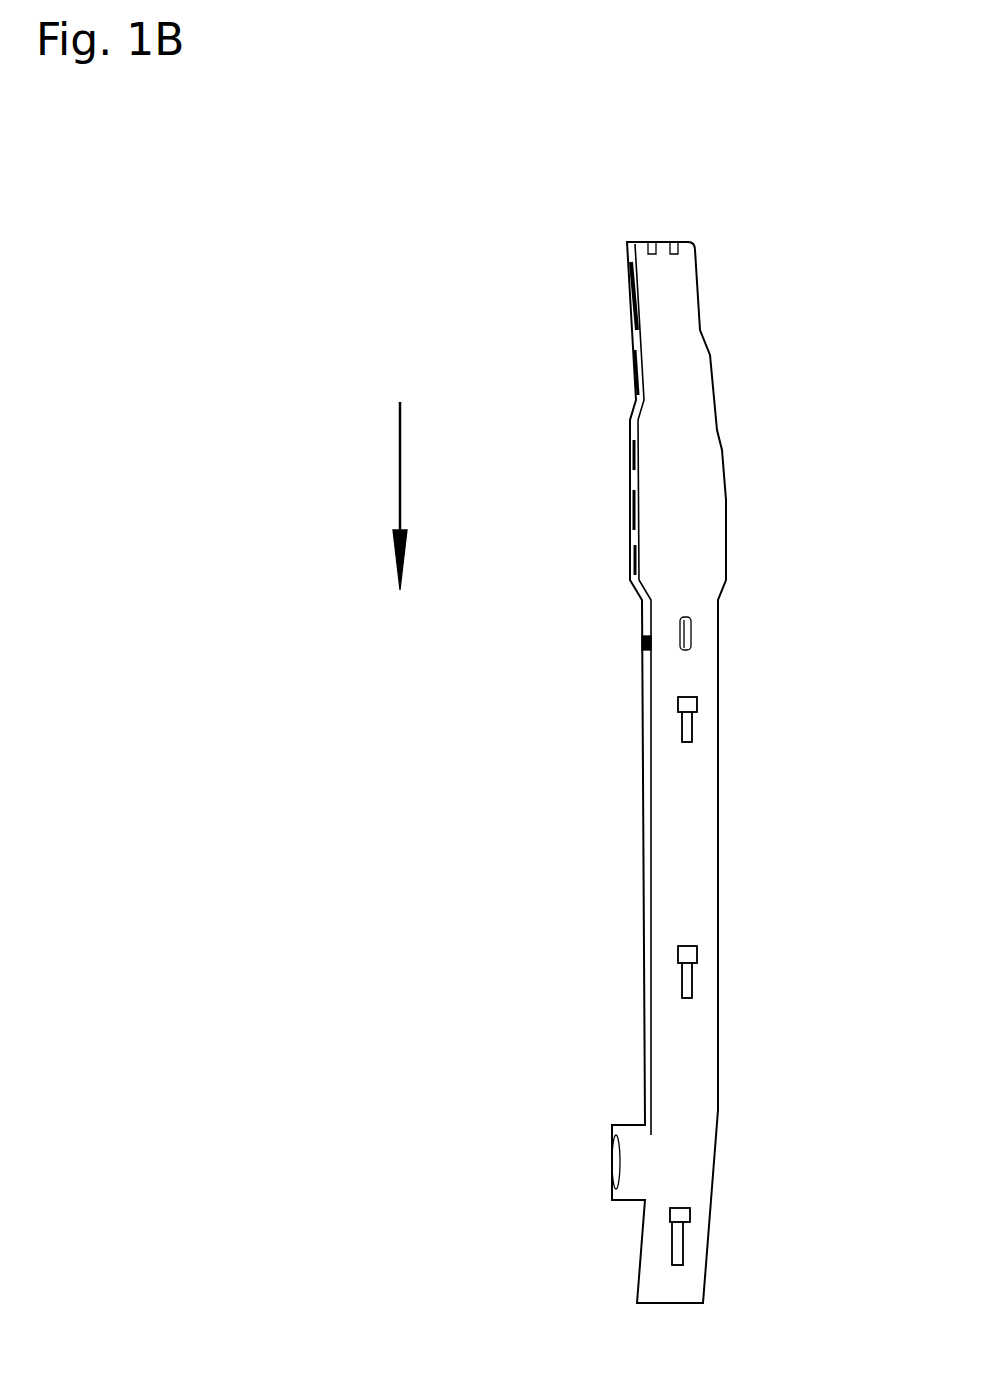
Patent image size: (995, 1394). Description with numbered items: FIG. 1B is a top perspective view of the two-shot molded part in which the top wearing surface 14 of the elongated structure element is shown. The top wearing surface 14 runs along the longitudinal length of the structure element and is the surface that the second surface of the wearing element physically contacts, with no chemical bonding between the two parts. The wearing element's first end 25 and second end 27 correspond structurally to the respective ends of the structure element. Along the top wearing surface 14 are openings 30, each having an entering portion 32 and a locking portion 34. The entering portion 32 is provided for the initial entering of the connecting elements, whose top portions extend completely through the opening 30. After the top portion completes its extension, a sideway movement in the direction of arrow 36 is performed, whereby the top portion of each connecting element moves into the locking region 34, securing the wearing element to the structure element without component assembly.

The top wearing surface 14 is at (703, 535).
The first end 25 is at (685, 915).
The second end 27 is at (680, 408).
The openings 30 is at (707, 688).
The entering portion 32 is at (683, 710).
The locking portion 34 is at (683, 735).
The arrow 36 is at (382, 496).